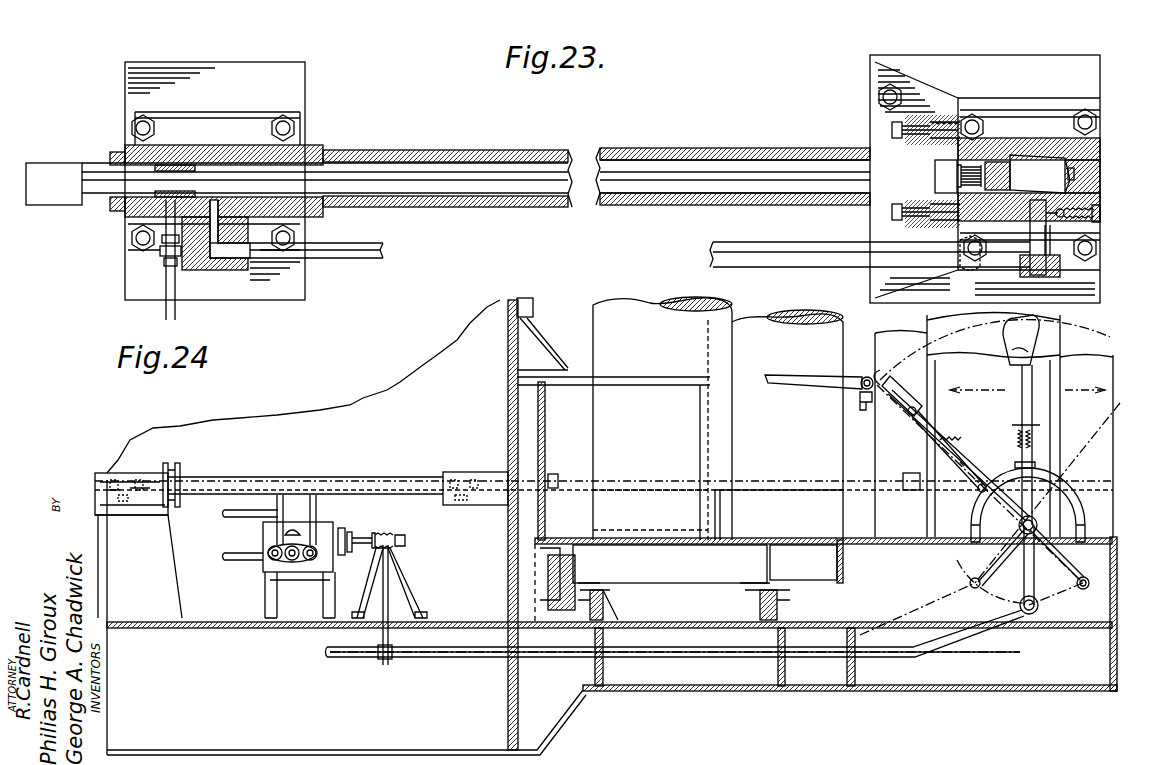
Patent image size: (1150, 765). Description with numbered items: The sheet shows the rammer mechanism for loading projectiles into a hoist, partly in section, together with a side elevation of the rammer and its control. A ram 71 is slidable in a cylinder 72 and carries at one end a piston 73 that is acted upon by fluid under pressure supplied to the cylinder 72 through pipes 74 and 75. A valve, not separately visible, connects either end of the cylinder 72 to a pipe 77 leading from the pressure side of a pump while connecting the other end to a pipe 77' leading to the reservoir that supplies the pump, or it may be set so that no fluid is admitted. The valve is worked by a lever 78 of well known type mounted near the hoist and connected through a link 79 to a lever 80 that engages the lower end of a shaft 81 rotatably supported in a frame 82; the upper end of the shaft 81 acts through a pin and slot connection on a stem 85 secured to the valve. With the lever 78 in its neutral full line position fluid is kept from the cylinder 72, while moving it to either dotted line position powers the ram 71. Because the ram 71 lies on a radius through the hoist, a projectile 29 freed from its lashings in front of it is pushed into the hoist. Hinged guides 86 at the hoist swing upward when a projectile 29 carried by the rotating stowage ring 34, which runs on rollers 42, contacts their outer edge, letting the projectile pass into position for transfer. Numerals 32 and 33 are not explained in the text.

In FIG. 24, the projectile 29 is at (745, 325).
In FIG. 24, the pivot 32 is at (1067, 577).
In FIG. 24, the hull deck 33 is at (218, 630).
In FIG. 24, the movable stowage ring 34 is at (670, 553).
In FIG. 24, the rollers 42 is at (603, 600).
In FIG. 23, the ram 71 is at (678, 165).
In FIG. 24, the ram 71 is at (556, 476).
In FIG. 23, the cylinder 72 is at (522, 150).
In FIG. 24, the cylinder 72 is at (400, 480).
In FIG. 23, the piston 73 is at (1030, 165).
In FIG. 23, the pipe 74 is at (355, 258).
In FIG. 24, the pipe 74 is at (316, 506).
In FIG. 23, the pipe 75 is at (742, 250).
In FIG. 24, the pipe 75 is at (272, 500).
In FIG. 24, the pipe 77 is at (229, 525).
In FIG. 24, the pipe 77' is at (221, 567).
In FIG. 24, the lever 78 is at (1022, 403).
In FIG. 24, the link 79 is at (938, 602).
In FIG. 24, the lever 80 is at (375, 660).
In FIG. 24, the shaft 81 is at (386, 588).
In FIG. 24, the frame 82 is at (400, 590).
In FIG. 24, the stem 85 is at (358, 535).
In FIG. 24, the hinged guides 86 is at (782, 388).